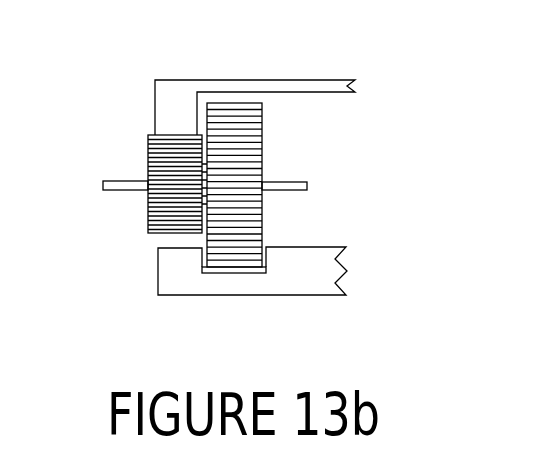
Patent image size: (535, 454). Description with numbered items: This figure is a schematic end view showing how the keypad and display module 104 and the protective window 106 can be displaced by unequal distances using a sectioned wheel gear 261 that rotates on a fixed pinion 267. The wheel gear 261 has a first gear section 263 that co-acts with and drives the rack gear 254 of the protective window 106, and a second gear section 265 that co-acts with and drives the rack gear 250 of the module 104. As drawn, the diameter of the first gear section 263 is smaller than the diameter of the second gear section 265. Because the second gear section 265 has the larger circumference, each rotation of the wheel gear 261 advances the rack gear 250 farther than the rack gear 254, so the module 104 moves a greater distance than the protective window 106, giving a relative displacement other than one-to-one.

The wheel gear 261 is at (118, 148).
The rack gear 254 is at (153, 132).
The protective window 106 is at (310, 85).
The fixed pinion 267 is at (286, 182).
The second gear section 265 is at (267, 207).
The first gear section 263 is at (145, 208).
The rack gear 250 is at (233, 273).
The module 104 is at (292, 280).